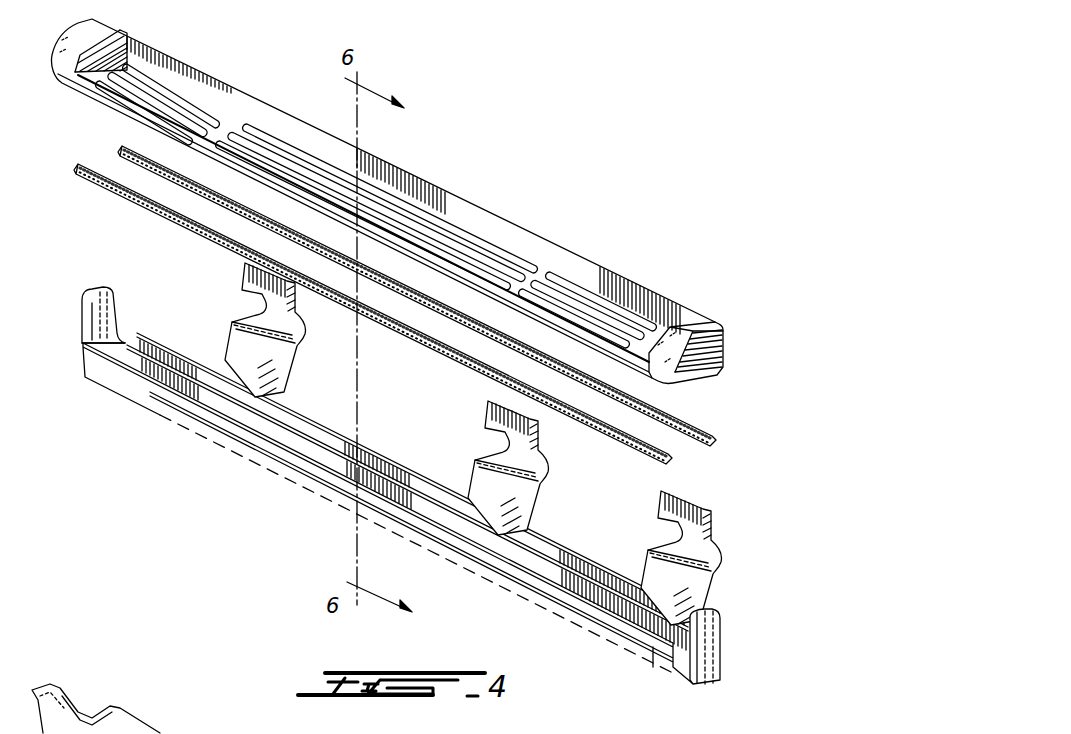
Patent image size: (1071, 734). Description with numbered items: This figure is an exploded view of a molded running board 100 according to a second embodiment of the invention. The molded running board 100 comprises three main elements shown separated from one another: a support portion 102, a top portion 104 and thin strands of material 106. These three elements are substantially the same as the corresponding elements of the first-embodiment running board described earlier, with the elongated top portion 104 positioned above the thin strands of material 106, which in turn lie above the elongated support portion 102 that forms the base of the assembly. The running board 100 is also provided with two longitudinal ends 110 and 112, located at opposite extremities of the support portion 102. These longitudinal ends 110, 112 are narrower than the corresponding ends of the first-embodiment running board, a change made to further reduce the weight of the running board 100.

The molded running board 100 is at (578, 103).
The support portion 102 is at (492, 578).
The top portion 104 is at (533, 310).
The thin strands of material 106 is at (413, 298).
The longitudinal end 110 is at (83, 340).
The longitudinal end 112 is at (723, 637).